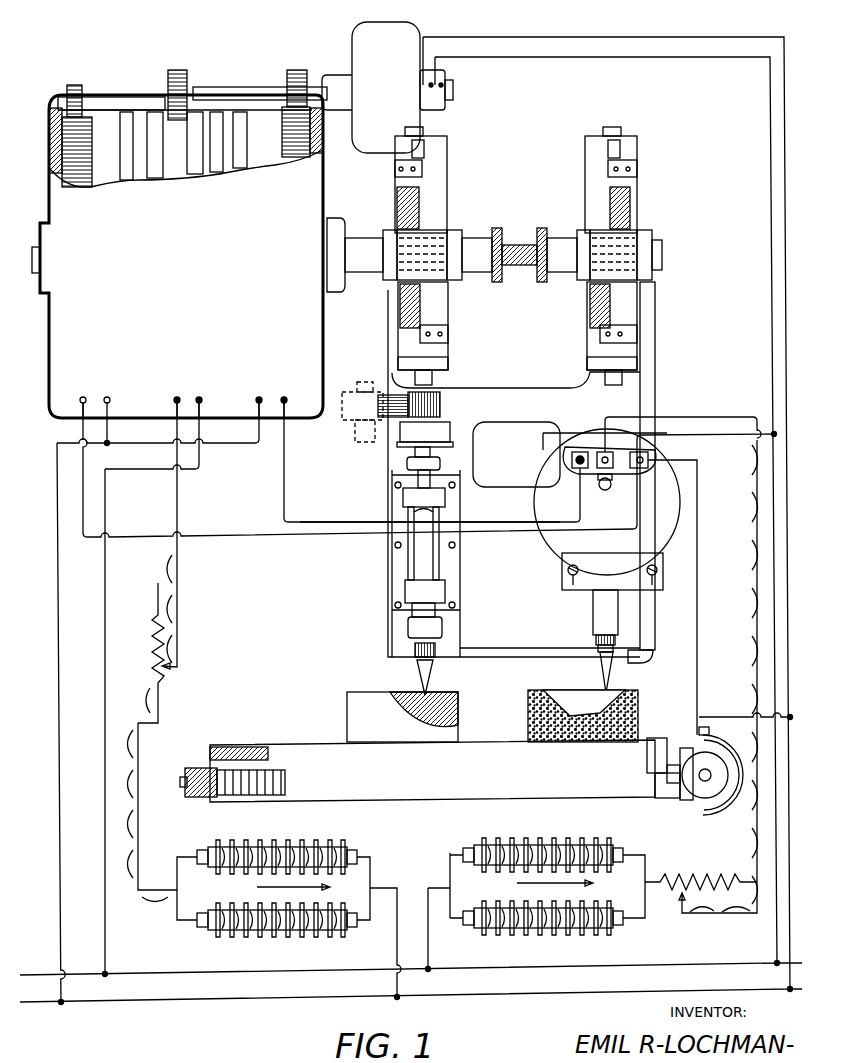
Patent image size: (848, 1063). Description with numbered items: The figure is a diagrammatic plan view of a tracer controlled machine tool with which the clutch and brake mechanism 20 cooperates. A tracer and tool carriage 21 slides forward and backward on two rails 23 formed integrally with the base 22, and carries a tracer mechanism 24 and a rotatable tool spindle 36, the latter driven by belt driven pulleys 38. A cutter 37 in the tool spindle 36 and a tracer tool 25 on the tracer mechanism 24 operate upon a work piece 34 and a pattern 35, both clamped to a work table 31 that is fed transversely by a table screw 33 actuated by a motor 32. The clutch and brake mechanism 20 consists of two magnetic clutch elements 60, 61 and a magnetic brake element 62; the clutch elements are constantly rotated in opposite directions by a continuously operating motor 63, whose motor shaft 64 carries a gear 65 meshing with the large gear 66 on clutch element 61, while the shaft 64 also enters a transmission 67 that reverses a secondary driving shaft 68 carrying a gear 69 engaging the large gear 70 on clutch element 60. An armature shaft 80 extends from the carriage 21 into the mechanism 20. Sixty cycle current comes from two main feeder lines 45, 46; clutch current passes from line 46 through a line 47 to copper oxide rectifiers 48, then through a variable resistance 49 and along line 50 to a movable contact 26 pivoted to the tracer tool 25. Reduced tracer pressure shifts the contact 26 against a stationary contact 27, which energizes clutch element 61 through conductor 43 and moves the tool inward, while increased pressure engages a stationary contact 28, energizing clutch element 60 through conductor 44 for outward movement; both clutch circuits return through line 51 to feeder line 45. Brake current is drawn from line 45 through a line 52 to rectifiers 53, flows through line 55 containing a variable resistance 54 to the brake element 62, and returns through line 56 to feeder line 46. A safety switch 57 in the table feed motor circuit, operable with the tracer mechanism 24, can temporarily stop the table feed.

The clutch and brake mechanism 20 is at (65, 353).
The tracer and tool carriage 21 is at (520, 392).
The base 22 is at (648, 310).
The rails 23 is at (590, 192).
The tracer mechanism 24 is at (560, 540).
The tracer tool 25 is at (612, 672).
The movable contact 26 is at (606, 488).
The stationary contact 27 is at (580, 447).
The stationary contact 28 is at (630, 440).
The work table 31 is at (431, 790).
The motor 32 is at (727, 815).
The table screw 33 is at (241, 772).
The work piece 34 is at (357, 716).
The pattern 35 is at (632, 722).
The tool spindle 36 is at (442, 623).
The cutter 37 is at (420, 680).
The belt driven pulleys 38 is at (357, 385).
The conductor 43 is at (325, 522).
The conductor 44 is at (322, 536).
The main feeder line 45 is at (483, 997).
The main feeder line 46 is at (505, 972).
The line 47 is at (432, 956).
The copper oxide rectifiers 48 is at (473, 865).
The variable resistance 49 is at (675, 873).
The line 50 is at (757, 496).
The return line 51 is at (58, 657).
The line 52 is at (397, 954).
The copper oxide rectifiers 53 is at (337, 906).
The variable resistance 54 is at (155, 630).
The line 55 is at (140, 802).
The return line 56 is at (107, 602).
The safety switch 57 is at (657, 457).
The clutch element 60 is at (112, 175).
The clutch element 61 is at (258, 165).
The brake element 62 is at (188, 152).
The motor 63 is at (393, 32).
The motor shaft 64 is at (236, 87).
The gear 65 is at (297, 70).
The large gear 66 is at (285, 126).
The transmission 67 is at (178, 70).
The secondary driving shaft 68 is at (124, 97).
The gear 69 is at (75, 85).
The large gear 70 is at (88, 148).
The armature shaft 80 is at (472, 262).